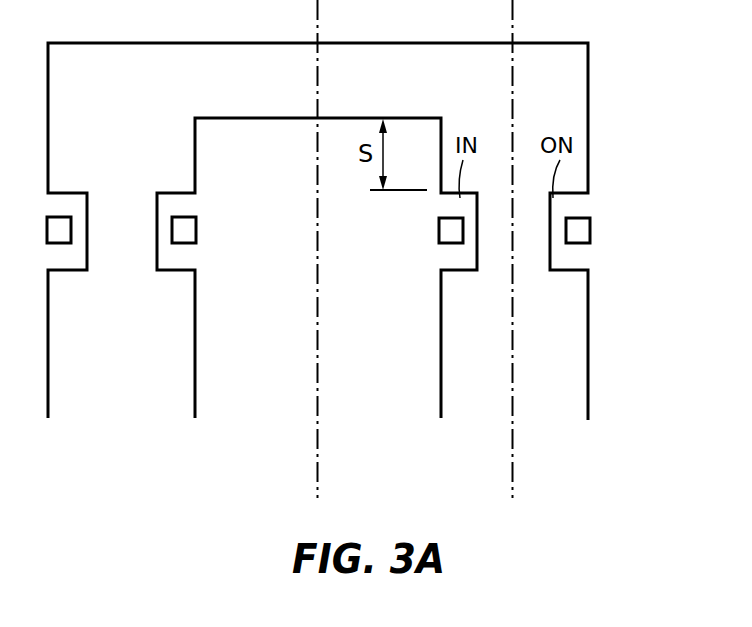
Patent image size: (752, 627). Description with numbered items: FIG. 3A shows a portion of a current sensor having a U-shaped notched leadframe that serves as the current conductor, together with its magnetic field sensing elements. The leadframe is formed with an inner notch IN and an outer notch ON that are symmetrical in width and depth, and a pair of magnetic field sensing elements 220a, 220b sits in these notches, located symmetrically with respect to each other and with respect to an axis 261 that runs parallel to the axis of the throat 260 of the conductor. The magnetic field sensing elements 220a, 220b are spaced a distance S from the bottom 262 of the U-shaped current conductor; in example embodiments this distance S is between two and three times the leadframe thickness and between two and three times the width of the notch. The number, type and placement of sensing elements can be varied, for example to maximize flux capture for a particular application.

The magnetic field sensing element 220a is at (438, 228).
The magnetic field sensing element 220b is at (592, 230).
The throat 260 is at (316, 323).
The axis 261 is at (513, 23).
The bottom of the U-shaped current conductor 262 is at (256, 119).